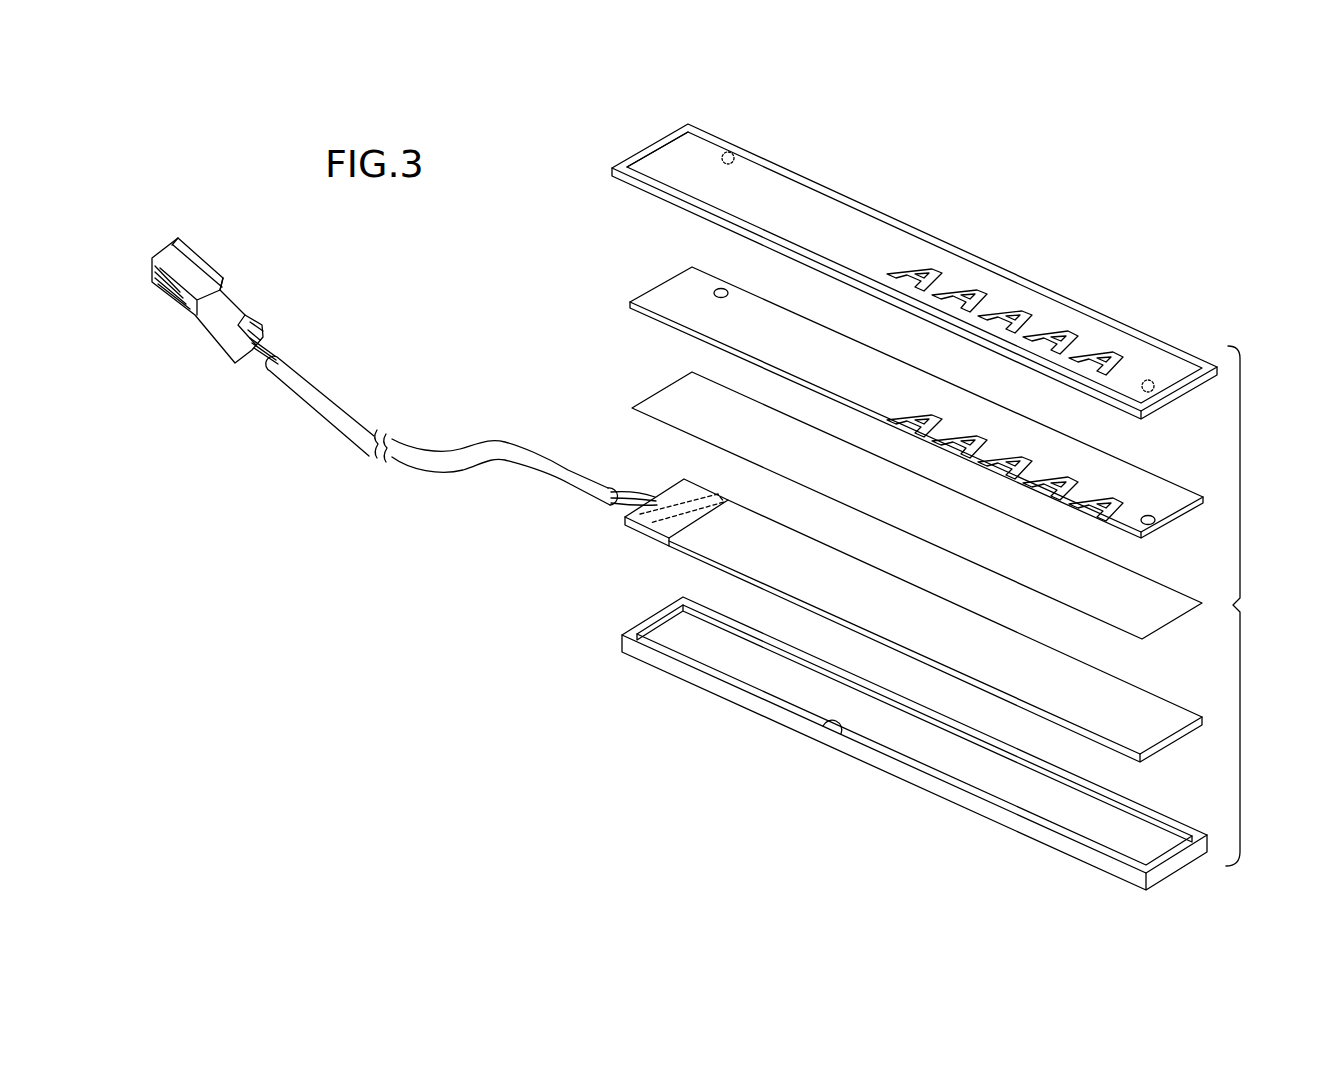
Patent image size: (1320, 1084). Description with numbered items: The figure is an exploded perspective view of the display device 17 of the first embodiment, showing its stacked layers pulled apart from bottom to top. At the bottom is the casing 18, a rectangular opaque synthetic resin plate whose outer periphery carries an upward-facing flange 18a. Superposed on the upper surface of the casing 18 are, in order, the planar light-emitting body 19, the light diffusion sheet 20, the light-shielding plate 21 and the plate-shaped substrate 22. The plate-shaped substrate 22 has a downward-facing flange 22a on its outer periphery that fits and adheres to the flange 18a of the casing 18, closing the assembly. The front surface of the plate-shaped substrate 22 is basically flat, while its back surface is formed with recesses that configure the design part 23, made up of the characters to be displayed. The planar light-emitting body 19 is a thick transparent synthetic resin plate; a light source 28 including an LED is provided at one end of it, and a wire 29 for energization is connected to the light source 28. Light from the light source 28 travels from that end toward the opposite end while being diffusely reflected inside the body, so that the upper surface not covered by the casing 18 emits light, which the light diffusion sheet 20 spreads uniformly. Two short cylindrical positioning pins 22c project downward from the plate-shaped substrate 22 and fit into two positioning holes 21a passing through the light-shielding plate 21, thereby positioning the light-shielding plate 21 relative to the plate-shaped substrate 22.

The display device 17 is at (1251, 606).
The casing 18 is at (917, 791).
The flange 18a is at (830, 718).
The planar light-emitting body 19 is at (1152, 720).
The light diffusion sheet 20 is at (1152, 628).
The light-shielding plate 21 is at (688, 341).
The positioning holes 21a is at (721, 290).
The plate-shaped substrate 22 is at (887, 211).
The flange 22a is at (640, 190).
The cylindrical positioning pins 22c is at (734, 155).
The design part 23 is at (1057, 313).
The light source 28 is at (648, 528).
The wire 29 is at (470, 455).